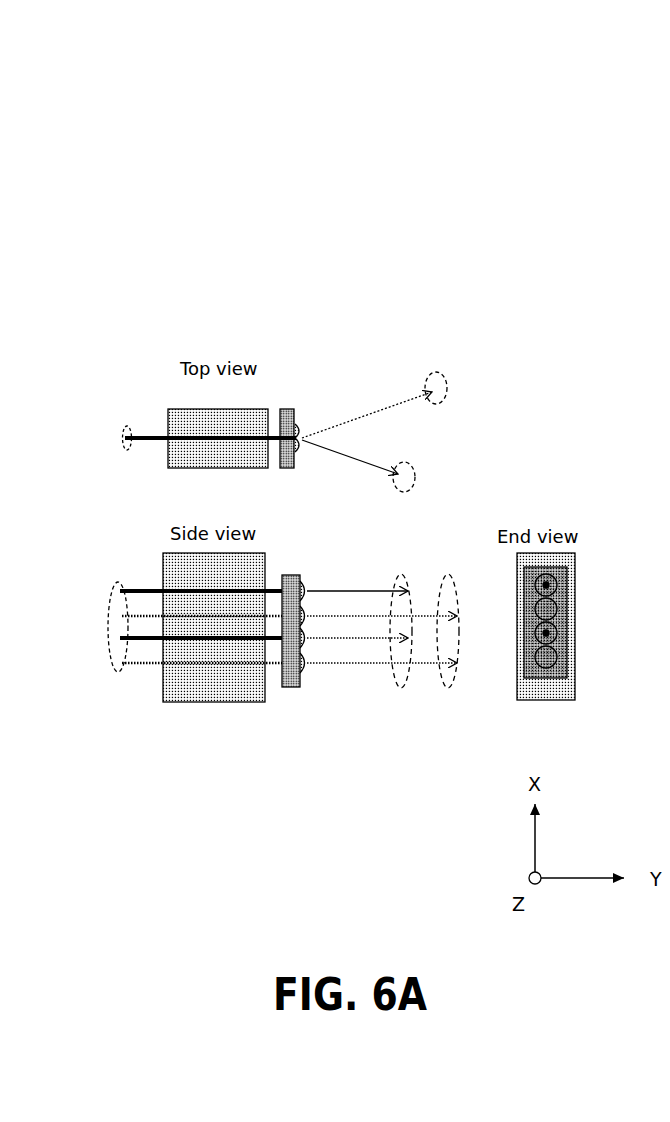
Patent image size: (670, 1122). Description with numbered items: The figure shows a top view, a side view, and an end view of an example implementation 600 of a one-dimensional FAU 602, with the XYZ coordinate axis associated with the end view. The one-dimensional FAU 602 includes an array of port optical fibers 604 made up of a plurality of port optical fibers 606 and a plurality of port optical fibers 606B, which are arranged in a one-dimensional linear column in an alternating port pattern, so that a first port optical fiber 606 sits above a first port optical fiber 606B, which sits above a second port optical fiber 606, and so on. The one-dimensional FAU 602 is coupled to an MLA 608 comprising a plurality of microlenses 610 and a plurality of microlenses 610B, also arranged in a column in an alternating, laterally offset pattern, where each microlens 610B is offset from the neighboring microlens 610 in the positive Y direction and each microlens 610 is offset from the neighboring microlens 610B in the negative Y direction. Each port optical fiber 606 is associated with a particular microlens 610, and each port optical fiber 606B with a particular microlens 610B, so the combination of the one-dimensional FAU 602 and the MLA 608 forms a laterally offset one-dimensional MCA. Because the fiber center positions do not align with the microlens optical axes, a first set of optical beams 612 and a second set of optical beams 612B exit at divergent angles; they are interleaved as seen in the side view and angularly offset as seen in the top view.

The example implementation 600 is at (134, 115).
The one-dimensional FAU 602 is at (157, 690).
The array of port optical fibers 604 is at (122, 445).
The port optical fiber 606 is at (112, 642).
The port optical fiber 606B is at (117, 662).
The MLA 608 is at (295, 687).
The microlens 610 is at (307, 645).
The microlens 610B is at (303, 667).
The first set of optical beams 612 is at (410, 490).
The second set of optical beams 612B is at (445, 386).